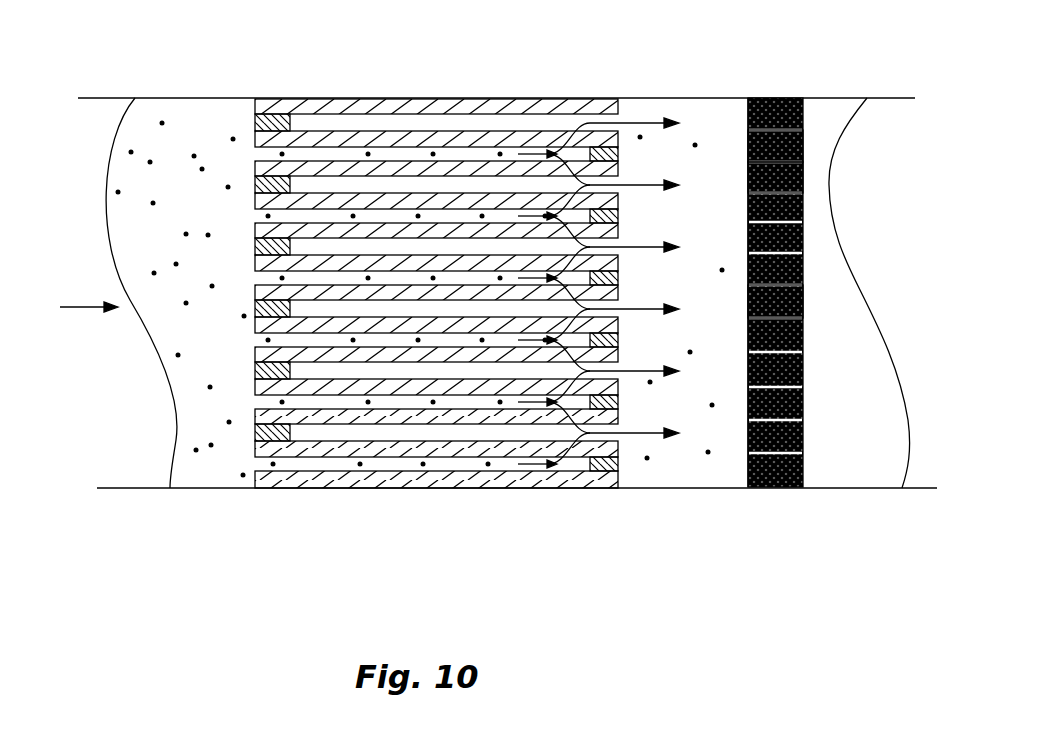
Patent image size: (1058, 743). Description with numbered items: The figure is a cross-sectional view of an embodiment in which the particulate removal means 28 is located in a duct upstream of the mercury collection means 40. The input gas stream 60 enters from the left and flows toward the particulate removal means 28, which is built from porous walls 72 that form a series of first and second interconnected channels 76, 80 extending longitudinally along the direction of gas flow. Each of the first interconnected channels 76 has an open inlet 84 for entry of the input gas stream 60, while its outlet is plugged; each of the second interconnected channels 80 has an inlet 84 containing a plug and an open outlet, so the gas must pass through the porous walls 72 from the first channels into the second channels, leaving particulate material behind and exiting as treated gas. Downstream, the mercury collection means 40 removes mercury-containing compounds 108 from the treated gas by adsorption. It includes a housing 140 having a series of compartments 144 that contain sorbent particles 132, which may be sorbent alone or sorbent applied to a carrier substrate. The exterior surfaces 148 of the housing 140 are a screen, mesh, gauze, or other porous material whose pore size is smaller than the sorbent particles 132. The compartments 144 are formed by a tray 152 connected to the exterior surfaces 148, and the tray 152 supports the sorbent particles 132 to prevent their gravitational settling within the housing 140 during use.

The particulate removal means 28 is at (464, 303).
The mercury collection means 40 is at (801, 249).
The input gas stream 60 is at (85, 310).
The porous walls 72 is at (432, 482).
The first interconnected channels 76 is at (390, 465).
The second interconnected channels 80 is at (465, 435).
The inlet 84 is at (258, 468).
The mercury-containing compounds 108 is at (196, 450).
The sorbent particles 132 is at (803, 125).
The housing 140 is at (780, 98).
The compartments 144 is at (803, 107).
The exterior surfaces 148 is at (803, 208).
The tray 152 is at (803, 312).